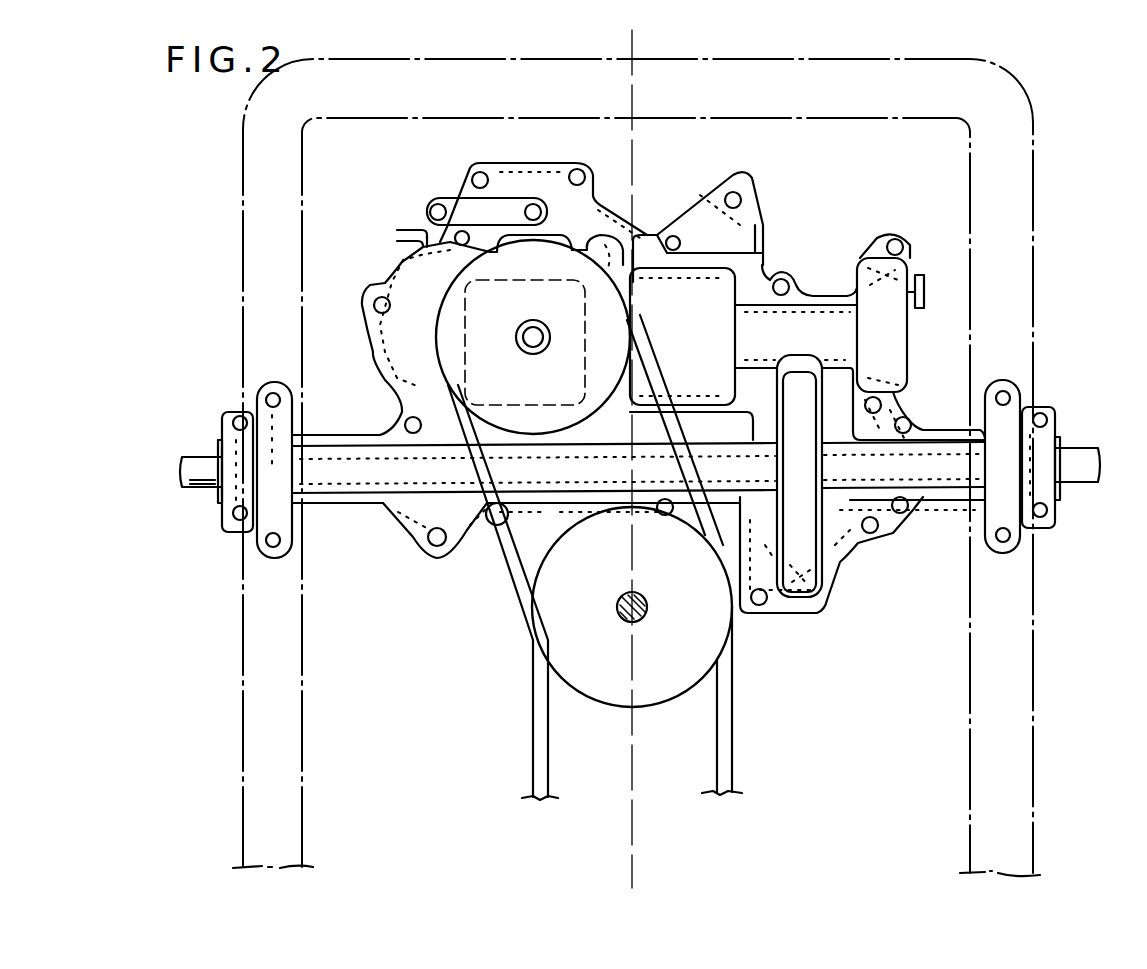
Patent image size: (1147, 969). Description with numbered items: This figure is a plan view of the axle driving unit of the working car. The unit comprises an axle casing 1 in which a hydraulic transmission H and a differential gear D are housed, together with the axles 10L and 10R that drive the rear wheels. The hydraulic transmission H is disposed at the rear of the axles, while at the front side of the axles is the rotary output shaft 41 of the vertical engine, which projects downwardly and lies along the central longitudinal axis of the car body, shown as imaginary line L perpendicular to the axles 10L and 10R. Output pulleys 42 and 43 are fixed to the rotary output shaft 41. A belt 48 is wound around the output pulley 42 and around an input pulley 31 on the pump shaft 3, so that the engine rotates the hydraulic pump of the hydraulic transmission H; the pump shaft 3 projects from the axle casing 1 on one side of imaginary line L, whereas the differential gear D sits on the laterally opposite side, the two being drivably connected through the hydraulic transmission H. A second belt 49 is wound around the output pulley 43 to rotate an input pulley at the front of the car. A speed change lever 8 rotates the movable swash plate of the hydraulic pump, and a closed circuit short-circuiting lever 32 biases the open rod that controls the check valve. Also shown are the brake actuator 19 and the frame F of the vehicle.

The axle casing 1 is at (558, 503).
The pump shaft 3 is at (540, 320).
The speed change lever 8 is at (450, 197).
The axle 10R is at (207, 460).
The axle 10L is at (1080, 450).
The brake actuator 19 is at (924, 292).
The input pulley 31 is at (636, 262).
The closed circuit short-circuiting lever 32 is at (407, 230).
The rotary output shaft 41 is at (638, 622).
The output pulley 42 is at (632, 650).
The output pulley 43 is at (660, 708).
The belt 48 is at (647, 383).
The belt 49 is at (733, 716).
The hydraulic transmission H is at (355, 357).
The differential gear D is at (843, 563).
The vehicle frame F is at (291, 700).
The imaginary line L is at (632, 845).